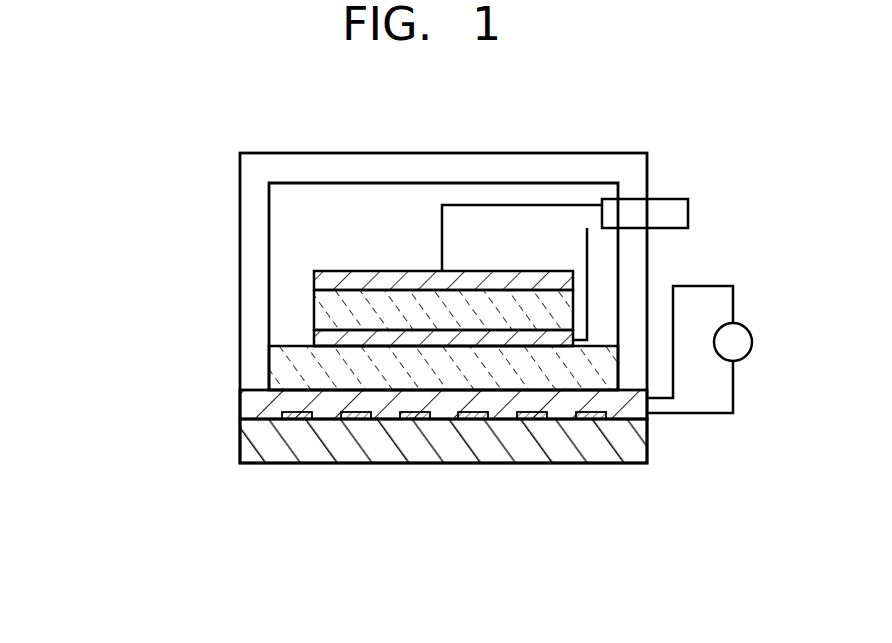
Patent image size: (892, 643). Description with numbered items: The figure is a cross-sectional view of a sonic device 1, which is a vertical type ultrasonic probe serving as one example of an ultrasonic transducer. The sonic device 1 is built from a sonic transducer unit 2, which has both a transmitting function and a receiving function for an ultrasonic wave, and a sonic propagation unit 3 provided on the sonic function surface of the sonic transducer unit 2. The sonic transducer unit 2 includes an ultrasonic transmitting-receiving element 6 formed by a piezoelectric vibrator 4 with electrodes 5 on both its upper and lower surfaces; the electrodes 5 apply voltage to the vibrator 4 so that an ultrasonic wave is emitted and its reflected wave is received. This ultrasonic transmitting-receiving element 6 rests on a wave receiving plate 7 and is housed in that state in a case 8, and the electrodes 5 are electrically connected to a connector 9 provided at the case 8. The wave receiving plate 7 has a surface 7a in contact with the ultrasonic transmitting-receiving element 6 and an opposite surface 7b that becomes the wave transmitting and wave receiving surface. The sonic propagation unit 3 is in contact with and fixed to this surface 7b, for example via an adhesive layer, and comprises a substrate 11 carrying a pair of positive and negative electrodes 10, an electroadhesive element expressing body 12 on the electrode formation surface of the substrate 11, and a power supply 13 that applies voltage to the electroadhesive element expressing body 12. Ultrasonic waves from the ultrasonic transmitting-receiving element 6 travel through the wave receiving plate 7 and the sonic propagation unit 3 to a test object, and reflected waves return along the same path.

The sonic device 1 is at (620, 111).
The sonic transducer unit 2 is at (122, 153).
The sonic propagation unit 3 is at (122, 390).
The vibrator 4 is at (314, 310).
The electrodes 5 is at (314, 281).
The ultrasonic transmitting-receiving element 6 is at (195, 264).
The wave receiving plate 7 is at (285, 375).
The surface 7a is at (500, 348).
The wave transmitting-receiving surface 7b is at (536, 391).
The case 8 is at (352, 153).
The connector 9 is at (679, 199).
The electrodes 10 is at (296, 414).
The substrate 11 is at (262, 409).
The electroadhesive element expressing body 12 is at (406, 440).
The power supply 13 is at (745, 327).